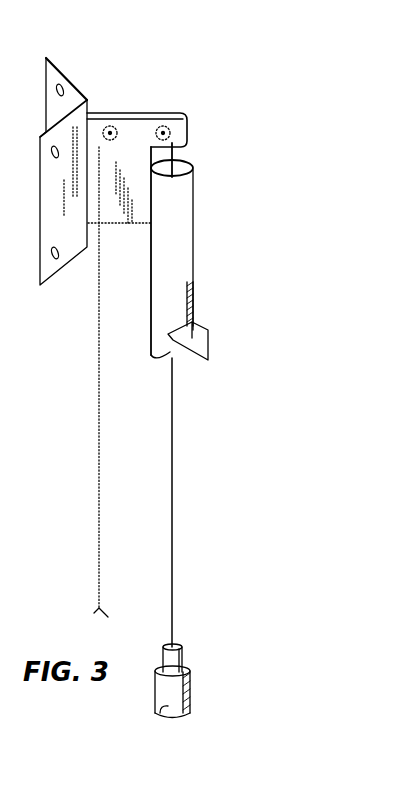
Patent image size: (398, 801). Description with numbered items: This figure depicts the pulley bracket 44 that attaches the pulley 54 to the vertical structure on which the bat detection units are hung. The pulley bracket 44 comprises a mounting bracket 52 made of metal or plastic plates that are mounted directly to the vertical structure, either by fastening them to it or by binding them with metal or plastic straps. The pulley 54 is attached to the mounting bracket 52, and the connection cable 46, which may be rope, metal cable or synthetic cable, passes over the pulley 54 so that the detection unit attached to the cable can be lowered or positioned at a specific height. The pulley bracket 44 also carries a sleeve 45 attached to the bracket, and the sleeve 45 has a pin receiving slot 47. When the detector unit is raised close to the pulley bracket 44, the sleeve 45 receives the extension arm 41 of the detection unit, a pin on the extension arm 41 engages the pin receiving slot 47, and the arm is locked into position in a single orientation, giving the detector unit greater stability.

The pulley bracket 44 is at (128, 60).
The mounting bracket 52 is at (62, 78).
The pulley 54 is at (130, 106).
The sleeve 45 is at (178, 212).
The pin receiving slot 47 is at (193, 312).
The connection cable 46 is at (98, 515).
The extension arm 41 is at (190, 686).